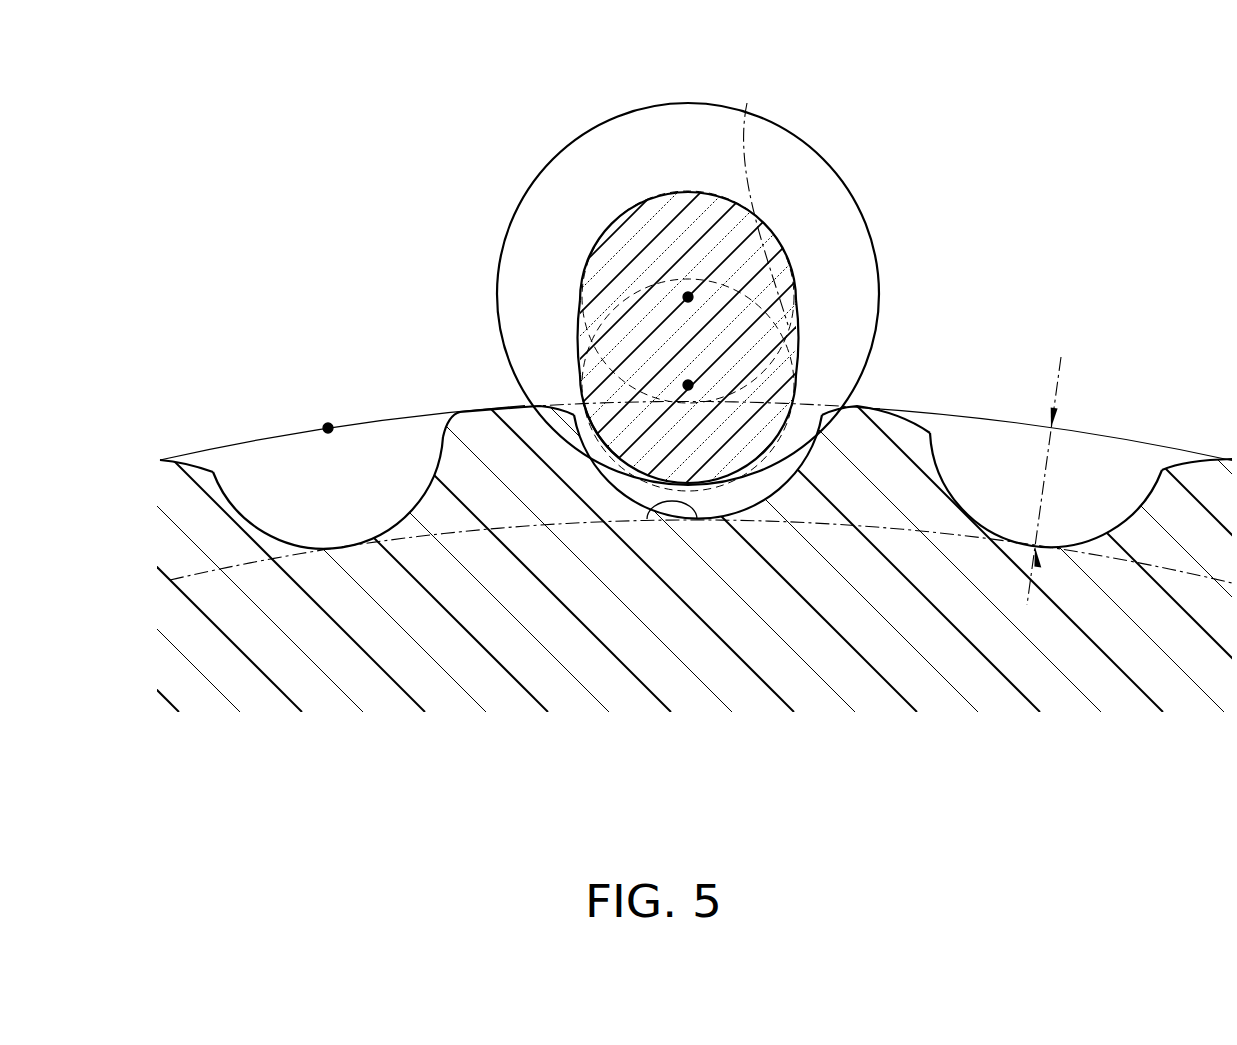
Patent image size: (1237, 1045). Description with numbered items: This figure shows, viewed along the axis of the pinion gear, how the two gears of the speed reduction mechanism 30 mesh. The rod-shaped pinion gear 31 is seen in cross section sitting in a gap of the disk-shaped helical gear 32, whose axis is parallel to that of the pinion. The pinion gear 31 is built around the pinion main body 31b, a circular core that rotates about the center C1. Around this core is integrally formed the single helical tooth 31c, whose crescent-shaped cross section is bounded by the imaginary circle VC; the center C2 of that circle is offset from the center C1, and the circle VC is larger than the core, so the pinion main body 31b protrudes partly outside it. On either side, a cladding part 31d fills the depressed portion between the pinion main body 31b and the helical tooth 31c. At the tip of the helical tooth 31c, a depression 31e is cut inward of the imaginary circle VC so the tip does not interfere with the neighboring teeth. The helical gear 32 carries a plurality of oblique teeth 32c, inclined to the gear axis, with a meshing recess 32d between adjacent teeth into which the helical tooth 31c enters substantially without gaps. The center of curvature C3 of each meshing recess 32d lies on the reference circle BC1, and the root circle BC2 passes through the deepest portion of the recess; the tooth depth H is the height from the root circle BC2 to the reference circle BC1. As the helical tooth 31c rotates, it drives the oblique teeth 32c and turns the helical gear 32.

The speed reduction mechanism 30 is at (1015, 205).
The pinion gear 31 is at (823, 152).
The pinion main body 31b is at (687, 228).
The helical tooth 31c is at (727, 433).
The cladding part 31d is at (582, 328).
The depression 31e is at (630, 482).
The helical gear 32 is at (160, 462).
The oblique tooth 32c is at (487, 442).
The meshing recess 32d is at (985, 512).
The center of the pinion main body C1 is at (688, 297).
The center of the helical tooth C2 is at (688, 385).
The center of curvature of the meshing recess C3 is at (328, 428).
The imaginary circle VC is at (752, 105).
The reference circle BC1 is at (1117, 435).
The root circle BC2 is at (937, 533).
The tooth depth H is at (1046, 481).